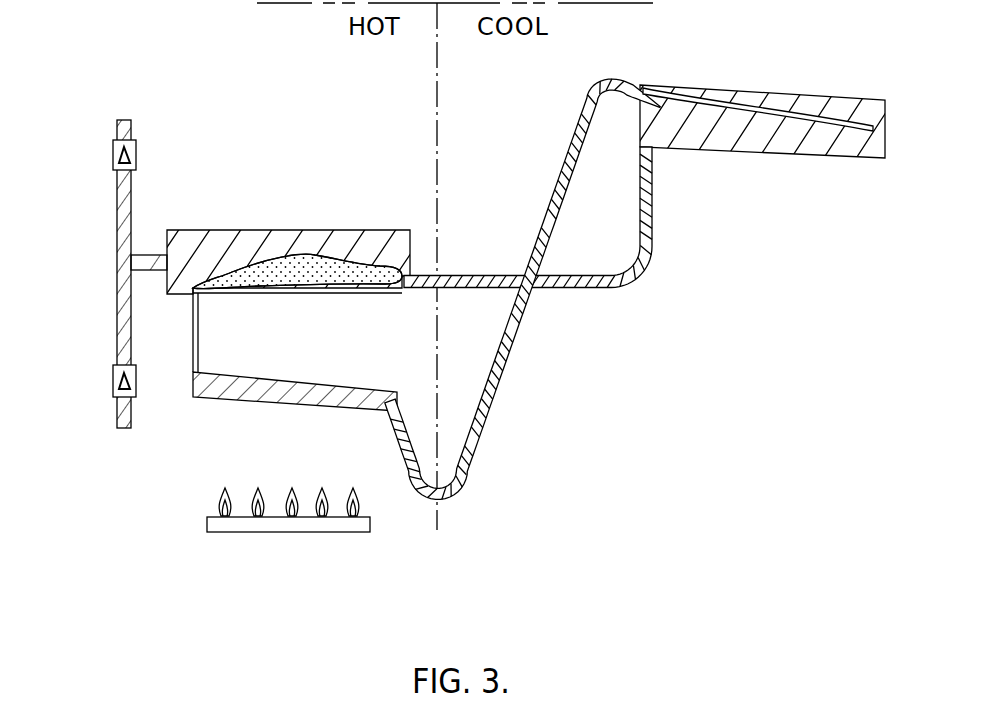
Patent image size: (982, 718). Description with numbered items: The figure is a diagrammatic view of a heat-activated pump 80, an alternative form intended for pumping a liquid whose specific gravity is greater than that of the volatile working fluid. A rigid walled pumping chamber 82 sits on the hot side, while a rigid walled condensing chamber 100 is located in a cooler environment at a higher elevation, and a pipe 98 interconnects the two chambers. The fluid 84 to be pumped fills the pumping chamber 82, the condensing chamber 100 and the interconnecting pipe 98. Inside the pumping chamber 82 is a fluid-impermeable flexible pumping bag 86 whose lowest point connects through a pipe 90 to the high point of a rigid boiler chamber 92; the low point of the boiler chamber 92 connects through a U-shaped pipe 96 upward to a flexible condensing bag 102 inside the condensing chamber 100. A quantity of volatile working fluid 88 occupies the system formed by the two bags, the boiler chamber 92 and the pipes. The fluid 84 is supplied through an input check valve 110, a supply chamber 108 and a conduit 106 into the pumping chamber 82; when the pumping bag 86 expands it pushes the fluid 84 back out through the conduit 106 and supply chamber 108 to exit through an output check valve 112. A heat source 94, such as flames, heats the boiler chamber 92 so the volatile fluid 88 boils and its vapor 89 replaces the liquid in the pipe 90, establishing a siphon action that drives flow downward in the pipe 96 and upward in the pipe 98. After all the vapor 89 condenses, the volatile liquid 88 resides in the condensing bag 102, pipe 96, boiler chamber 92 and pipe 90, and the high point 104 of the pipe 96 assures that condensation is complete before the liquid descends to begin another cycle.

The heat-activated pump 80 is at (353, 106).
The pumping chamber 82 is at (230, 235).
The fluid to be pumped 84 is at (273, 250).
The pumping bag 86 is at (318, 255).
The volatile working fluid 88 is at (232, 398).
The volatile fluid vapor 89 is at (338, 272).
The pipe 90 is at (200, 340).
The boiler chamber 92 is at (297, 405).
The heat source 94 is at (302, 532).
The U-shaped pipe 96 is at (490, 392).
The pipe 98 is at (653, 233).
The condensing chamber 100 is at (695, 152).
The condensing bag 102 is at (752, 108).
The high point 104 is at (603, 80).
The conduit 106 is at (148, 255).
The supply chamber 108 is at (117, 215).
The input check valve 110 is at (113, 383).
The output check valve 112 is at (138, 150).